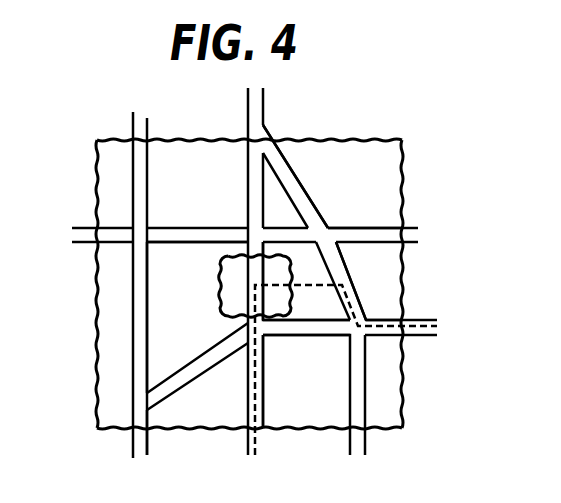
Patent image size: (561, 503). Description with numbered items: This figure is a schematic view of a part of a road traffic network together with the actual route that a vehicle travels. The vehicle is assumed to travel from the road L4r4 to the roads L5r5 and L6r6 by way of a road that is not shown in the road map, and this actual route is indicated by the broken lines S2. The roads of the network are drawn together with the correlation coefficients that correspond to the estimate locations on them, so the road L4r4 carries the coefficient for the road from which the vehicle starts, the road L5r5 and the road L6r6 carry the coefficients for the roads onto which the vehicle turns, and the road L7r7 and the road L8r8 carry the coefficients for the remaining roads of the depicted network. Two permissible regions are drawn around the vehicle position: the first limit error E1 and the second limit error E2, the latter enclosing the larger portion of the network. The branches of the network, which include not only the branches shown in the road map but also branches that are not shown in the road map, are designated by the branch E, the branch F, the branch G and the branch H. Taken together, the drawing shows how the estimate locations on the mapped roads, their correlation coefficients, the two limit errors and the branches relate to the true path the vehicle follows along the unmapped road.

The second limit error E2 is at (97, 141).
The branch E is at (248, 264).
The first limit error E1 is at (197, 348).
The branch H is at (332, 176).
The road L7 with correlation coefficient r7 L7r7 is at (278, 215).
The road L5 with correlation coefficient r5 L5r5 is at (340, 268).
The road L6 with correlation coefficient r6 L6r6 is at (362, 347).
The branch F is at (306, 281).
The branch G is at (369, 281).
The actual route (broken lines) S2 is at (250, 376).
The road L8 with correlation coefficient r8 L8r8 is at (314, 395).
The road L4 with correlation coefficient r4 L4r4 is at (283, 283).